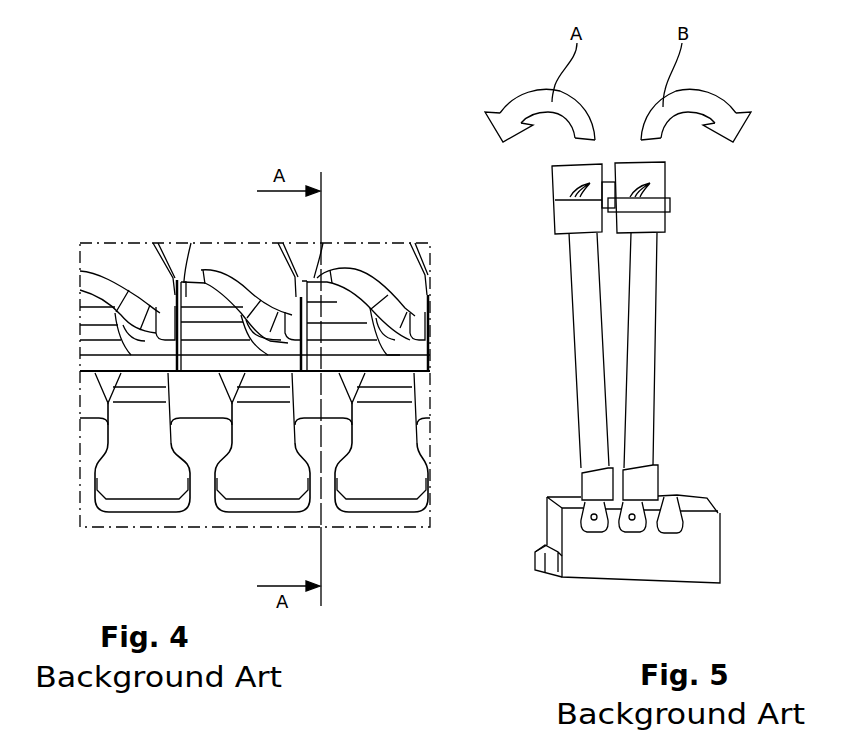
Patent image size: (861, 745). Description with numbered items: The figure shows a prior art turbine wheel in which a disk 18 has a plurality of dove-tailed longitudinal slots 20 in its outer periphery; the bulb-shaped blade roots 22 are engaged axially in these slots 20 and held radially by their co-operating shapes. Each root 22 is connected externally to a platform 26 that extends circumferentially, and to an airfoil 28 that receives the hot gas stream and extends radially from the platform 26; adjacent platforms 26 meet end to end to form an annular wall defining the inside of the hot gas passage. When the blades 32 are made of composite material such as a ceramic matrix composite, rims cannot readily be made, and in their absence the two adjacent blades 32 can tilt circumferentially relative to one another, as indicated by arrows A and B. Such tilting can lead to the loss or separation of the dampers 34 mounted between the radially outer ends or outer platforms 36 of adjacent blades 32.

In FIG. 4, the disk 18 is at (283, 492).
In FIG. 5, the disk 18 is at (610, 558).
In FIG. 4, the slots 20 is at (397, 512).
In FIG. 4, the blade roots 22 is at (380, 485).
In FIG. 5, the blade roots 22 is at (632, 533).
In FIG. 4, the platform 26 is at (418, 369).
In FIG. 5, the platform 26 is at (638, 487).
In FIG. 4, the airfoil 28 is at (368, 261).
In FIG. 4, the blades 32 is at (308, 283).
In FIG. 5, the blades 32 is at (631, 280).
In FIG. 5, the dampers 34 is at (604, 164).
In FIG. 5, the outer platforms 36 is at (565, 220).